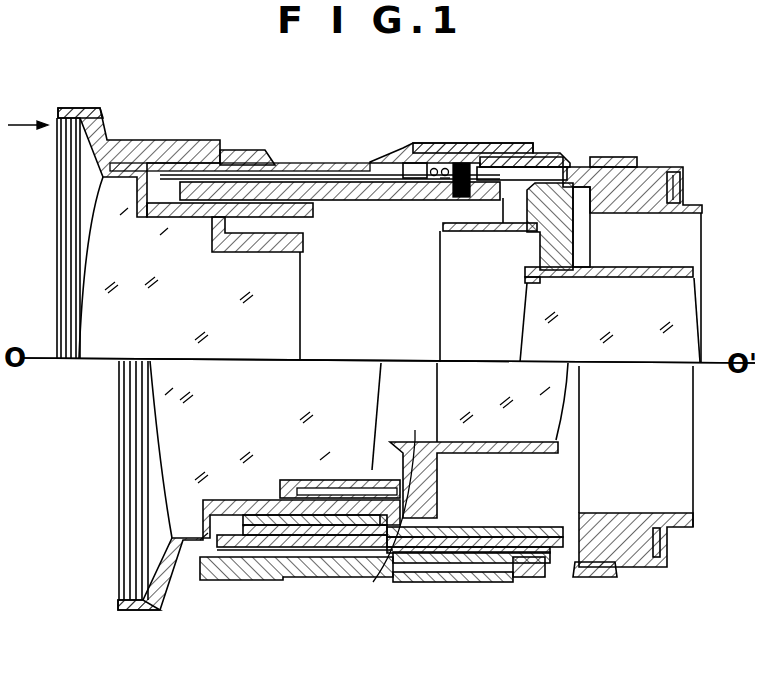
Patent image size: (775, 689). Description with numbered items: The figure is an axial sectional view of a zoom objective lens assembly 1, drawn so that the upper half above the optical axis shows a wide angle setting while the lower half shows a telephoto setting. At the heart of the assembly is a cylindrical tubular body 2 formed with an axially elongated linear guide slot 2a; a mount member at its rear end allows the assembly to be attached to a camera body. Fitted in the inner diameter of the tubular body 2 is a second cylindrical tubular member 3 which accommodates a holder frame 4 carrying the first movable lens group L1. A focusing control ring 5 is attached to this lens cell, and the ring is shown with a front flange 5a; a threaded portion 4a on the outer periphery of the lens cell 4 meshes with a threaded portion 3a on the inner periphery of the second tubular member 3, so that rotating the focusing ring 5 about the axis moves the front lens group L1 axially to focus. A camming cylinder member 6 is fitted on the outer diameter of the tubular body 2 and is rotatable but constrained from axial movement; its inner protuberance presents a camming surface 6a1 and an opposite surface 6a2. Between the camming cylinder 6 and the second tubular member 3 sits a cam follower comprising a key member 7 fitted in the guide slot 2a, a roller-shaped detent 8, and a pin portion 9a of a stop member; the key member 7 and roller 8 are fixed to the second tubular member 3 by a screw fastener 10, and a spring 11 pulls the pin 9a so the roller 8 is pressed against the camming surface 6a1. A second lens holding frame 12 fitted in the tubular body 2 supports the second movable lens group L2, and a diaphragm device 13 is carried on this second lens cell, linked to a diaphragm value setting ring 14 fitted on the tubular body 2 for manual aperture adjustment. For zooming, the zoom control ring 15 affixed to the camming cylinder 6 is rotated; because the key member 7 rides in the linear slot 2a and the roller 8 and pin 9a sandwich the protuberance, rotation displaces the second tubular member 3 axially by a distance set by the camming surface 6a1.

The lens assembly 1 is at (333, 130).
The cylindrical tubular body 2 is at (585, 175).
The linear guide slot 2a is at (518, 173).
The second cylindrical tubular member 3 is at (222, 190).
The threaded portion 3a is at (279, 205).
The holder frame 4 is at (278, 246).
The threaded portion 4a is at (305, 217).
The focusing control ring 5 is at (165, 150).
The flange of front lens cell 5a is at (66, 110).
The camming cylinder member 6 is at (496, 172).
The camming surface 6a1 is at (434, 165).
The ball 6a2 is at (452, 163).
The key member 7 is at (412, 178).
The detent 8 is at (462, 163).
The pin portion 9a is at (413, 165).
The screw fastener 10 is at (462, 198).
The spring 11 is at (437, 178).
The second lens holding frame 12 is at (556, 200).
The diaphragm device 13 is at (386, 521).
The diaphragm value setting ring 14 is at (613, 158).
The zoom control ring 15 is at (478, 150).
The first movable lens group L1 is at (183, 250).
The second movable lens group L2 is at (633, 302).